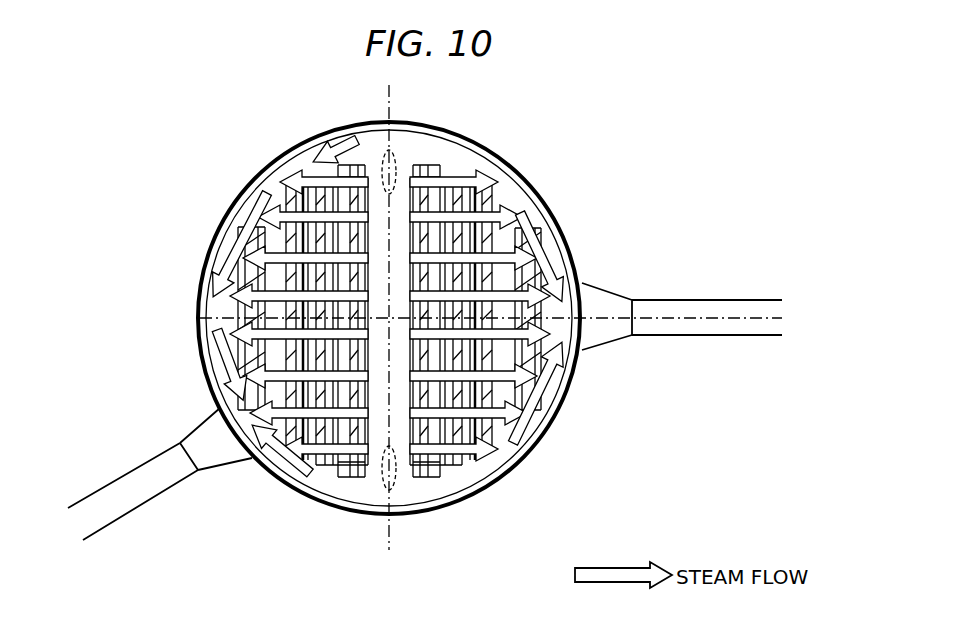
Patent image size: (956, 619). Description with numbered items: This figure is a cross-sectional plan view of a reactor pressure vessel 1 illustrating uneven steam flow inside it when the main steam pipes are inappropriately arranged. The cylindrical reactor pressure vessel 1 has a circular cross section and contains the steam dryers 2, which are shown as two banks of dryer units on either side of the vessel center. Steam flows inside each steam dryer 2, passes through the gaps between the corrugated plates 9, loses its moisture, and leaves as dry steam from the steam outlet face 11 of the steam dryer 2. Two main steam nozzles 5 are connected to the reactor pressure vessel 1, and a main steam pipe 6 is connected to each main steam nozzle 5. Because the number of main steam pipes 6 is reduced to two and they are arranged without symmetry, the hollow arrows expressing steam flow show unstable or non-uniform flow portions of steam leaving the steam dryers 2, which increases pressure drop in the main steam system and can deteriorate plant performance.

The reactor pressure vessel 1 is at (412, 122).
The steam dryer 2 is at (228, 357).
The main steam nozzle 5 is at (612, 300).
The main steam pipe 6 is at (692, 303).
The corrugated plate 9 is at (350, 168).
The steam outlet face 11 is at (369, 215).